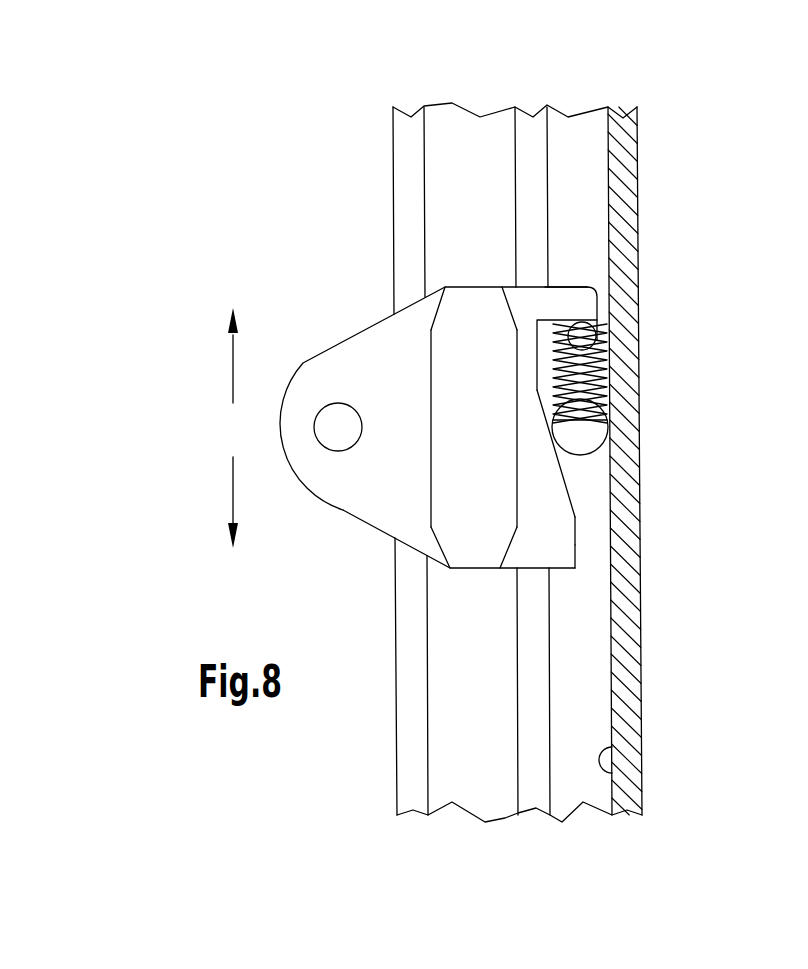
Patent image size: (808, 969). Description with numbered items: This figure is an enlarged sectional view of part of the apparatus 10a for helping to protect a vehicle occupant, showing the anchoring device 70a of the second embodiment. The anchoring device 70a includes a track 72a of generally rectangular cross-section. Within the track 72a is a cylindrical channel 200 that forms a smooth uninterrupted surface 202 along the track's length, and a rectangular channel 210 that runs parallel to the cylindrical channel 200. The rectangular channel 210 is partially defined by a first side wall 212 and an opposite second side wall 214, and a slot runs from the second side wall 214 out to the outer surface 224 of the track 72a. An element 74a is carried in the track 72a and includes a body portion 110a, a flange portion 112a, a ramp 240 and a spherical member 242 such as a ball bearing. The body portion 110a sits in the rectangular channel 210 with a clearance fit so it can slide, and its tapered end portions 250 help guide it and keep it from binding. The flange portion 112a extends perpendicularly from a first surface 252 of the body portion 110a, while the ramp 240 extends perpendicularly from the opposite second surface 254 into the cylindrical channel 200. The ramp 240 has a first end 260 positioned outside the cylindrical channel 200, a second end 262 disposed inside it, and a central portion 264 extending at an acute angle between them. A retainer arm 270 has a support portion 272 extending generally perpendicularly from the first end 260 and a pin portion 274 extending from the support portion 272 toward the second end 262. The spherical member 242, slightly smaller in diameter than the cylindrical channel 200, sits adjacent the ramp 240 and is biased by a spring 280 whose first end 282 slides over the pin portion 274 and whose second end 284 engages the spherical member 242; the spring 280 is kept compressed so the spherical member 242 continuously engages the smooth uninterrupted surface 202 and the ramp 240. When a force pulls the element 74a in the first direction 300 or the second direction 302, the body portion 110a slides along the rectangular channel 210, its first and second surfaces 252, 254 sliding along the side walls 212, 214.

The apparatus 10a is at (300, 102).
The anchoring device 70a is at (298, 205).
The track 72a is at (412, 648).
The element 74a is at (458, 477).
The body portion 110a is at (455, 375).
The flange portion 112a is at (377, 402).
The cylindrical channel 200 is at (580, 700).
The smooth uninterrupted surface 202 is at (612, 772).
The rectangular channel 210 is at (452, 755).
The first side wall 212 is at (518, 758).
The second side wall 214 is at (430, 795).
The outer surface 224 is at (398, 757).
The ramp 240 is at (545, 473).
The spherical member 242 is at (588, 437).
The tapered end portions 250 is at (468, 302).
The first surface 252 is at (430, 477).
The second surface 254 is at (518, 492).
The first end 260 is at (535, 340).
The second end 262 is at (567, 508).
The central portion 264 is at (550, 434).
The retainer arm 270 is at (588, 302).
The support portion 272 is at (569, 300).
The pin portion 274 is at (565, 333).
The spring 280 is at (605, 372).
The first end 282 is at (580, 337).
The second end 284 is at (565, 419).
The first direction 300 is at (232, 490).
The second direction 302 is at (232, 362).